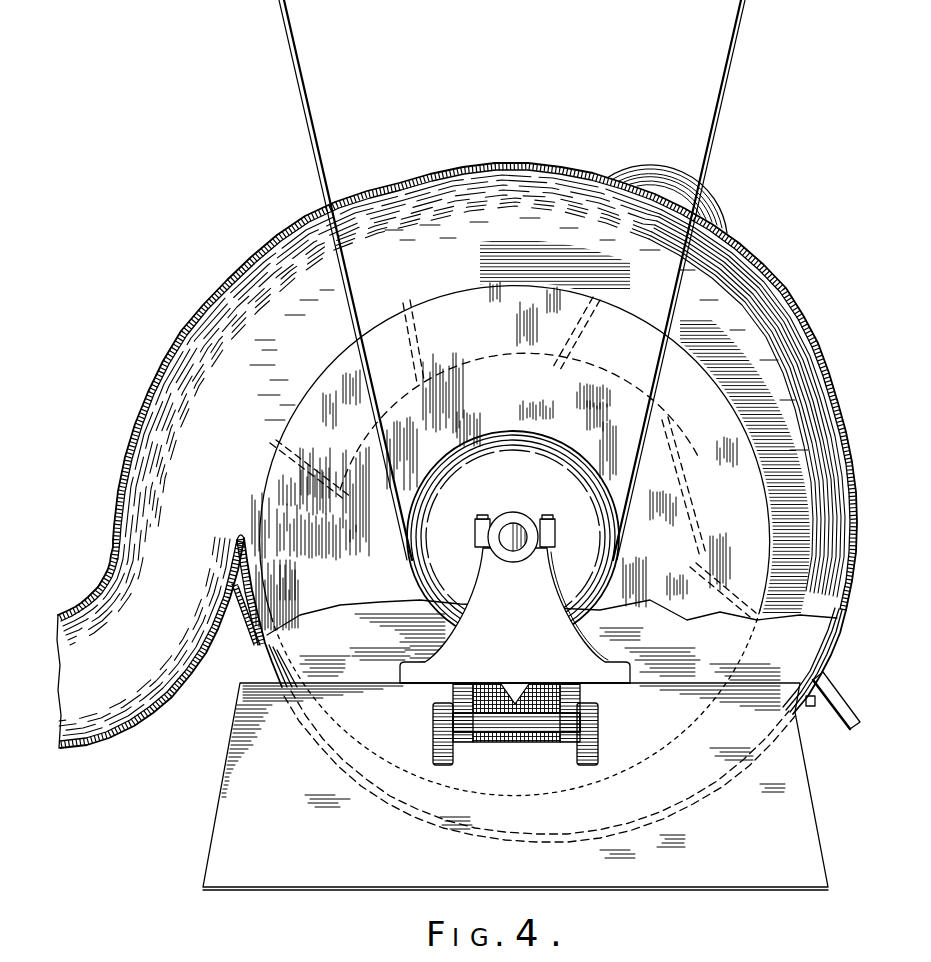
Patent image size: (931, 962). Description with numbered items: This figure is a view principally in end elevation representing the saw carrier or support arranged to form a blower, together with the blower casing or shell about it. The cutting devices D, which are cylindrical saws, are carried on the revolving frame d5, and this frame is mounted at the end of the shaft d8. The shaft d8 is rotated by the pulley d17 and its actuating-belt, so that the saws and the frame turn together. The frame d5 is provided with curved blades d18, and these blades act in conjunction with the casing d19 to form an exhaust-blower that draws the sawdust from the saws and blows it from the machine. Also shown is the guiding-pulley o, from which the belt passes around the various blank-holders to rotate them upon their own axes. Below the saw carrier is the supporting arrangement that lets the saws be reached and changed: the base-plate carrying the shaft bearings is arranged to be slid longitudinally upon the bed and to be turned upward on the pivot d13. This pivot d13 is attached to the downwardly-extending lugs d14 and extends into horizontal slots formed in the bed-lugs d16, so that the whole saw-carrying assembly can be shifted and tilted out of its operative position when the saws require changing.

The casing d19 is at (547, 172).
The curved blades d18 is at (426, 342).
The revolving frame d5 is at (278, 436).
The pulley d17 is at (513, 537).
The shaft d8 is at (513, 553).
The cutting devices D is at (703, 523).
The guiding-pulley o is at (713, 212).
The downwardly-extending lugs d14 is at (600, 707).
The bed-lugs d16 is at (440, 732).
The pivot d13 is at (520, 727).